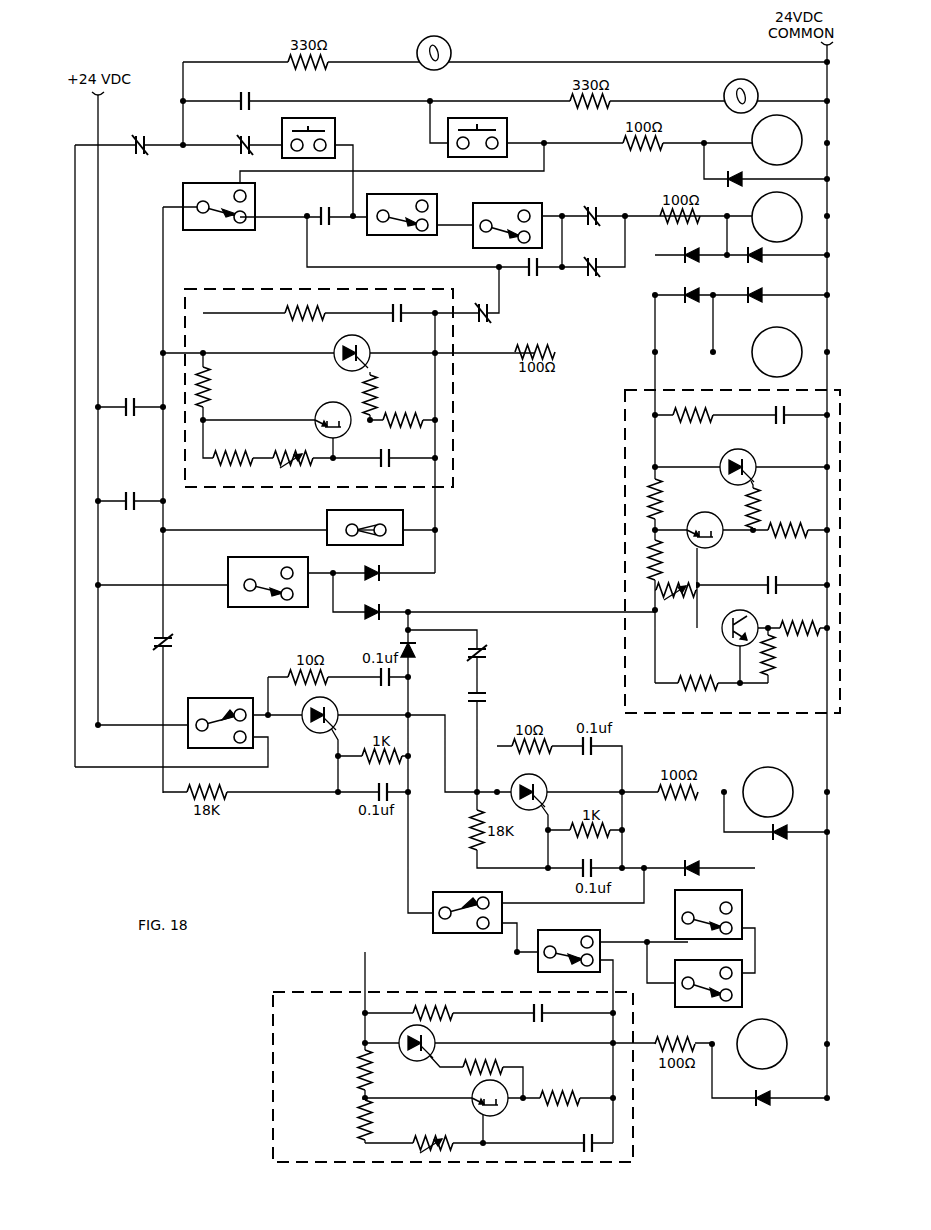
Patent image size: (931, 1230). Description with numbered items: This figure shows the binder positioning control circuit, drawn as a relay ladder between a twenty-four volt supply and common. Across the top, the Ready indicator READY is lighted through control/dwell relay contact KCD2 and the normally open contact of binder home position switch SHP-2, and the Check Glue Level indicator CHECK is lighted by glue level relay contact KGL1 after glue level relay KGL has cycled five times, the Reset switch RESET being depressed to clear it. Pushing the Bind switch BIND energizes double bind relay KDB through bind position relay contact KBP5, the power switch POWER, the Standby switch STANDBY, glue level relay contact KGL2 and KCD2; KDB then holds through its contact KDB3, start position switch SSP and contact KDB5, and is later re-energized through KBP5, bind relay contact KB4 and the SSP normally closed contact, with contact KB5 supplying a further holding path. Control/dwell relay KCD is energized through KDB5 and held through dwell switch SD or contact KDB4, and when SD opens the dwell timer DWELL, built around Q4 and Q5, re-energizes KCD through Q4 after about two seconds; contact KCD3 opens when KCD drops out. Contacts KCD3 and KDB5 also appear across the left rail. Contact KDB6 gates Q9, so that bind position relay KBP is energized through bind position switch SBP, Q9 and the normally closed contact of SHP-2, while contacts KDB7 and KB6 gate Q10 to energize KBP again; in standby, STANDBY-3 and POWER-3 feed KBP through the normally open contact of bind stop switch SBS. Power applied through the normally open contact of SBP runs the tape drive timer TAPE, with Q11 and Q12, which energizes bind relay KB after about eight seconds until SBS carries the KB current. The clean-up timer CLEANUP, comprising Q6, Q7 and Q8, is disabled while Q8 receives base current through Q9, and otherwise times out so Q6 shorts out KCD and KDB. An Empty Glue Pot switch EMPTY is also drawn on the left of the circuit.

The Ready indicator READY is at (431, 43).
The Check Glue Level indicator CHECK is at (713, 87).
The control/dwell relay contact KCD-2 KCD2 is at (139, 137).
The glue level relay contact KGL-1 KGL1 is at (240, 93).
The glue level relay contact KGL-2 KGL2 is at (240, 136).
The Bind switch BIND is at (328, 136).
The Reset switch RESET is at (501, 137).
The glue level relay KGL is at (777, 140).
The double bind relay KDB is at (777, 217).
The control/dwell relay KCD is at (777, 352).
The start position switch SSP is at (223, 218).
The double bind relay contact KDB-3 KDB3 is at (324, 209).
The Standby switch contacts 2 STANDBY is at (410, 225).
The power switch POWER is at (507, 215).
The bind position relay contact KBP-5 KBP5 is at (590, 207).
The bind relay contact KB-5 KB5 is at (592, 258).
The bind relay contact KB-4 KB4 is at (532, 276).
The double bind relay contact KDB-4 KDB4 is at (481, 322).
The dwell timer DWELL is at (306, 431).
The element Q4 is at (320, 349).
The element Q5 is at (298, 411).
The control/dwell relay contact KCD-3 KCD3 is at (130, 419).
The double bind relay contact KDB-5 KDB5 is at (130, 511).
The dwell switch SD is at (299, 518).
The Empty Glue Pot switch EMPTY is at (376, 600).
The double bind relay contact KDB-6 KDB6 is at (185, 642).
The bind relay contact KB-6 KB6 is at (493, 654).
The double bind relay contact KDB-7 KDB7 is at (498, 697).
The binder home position switch SHP-2 is at (188, 713).
The element Q9 is at (345, 719).
The element Q10 is at (555, 790).
The bind position relay KBP is at (768, 792).
The bind position switch SBP is at (478, 903).
The bind stop switch SBS is at (582, 942).
The power switch contacts 3 POWER-3 is at (743, 924).
The Standby switch contacts 3 STANDBY-3 is at (745, 986).
The tape drive timer TAPE is at (492, 1067).
The element Q11 is at (430, 1041).
The element Q12 is at (491, 1106).
The bind relay KB is at (762, 1044).
The clean-up timer CLEANUP is at (694, 504).
The element Q6 is at (750, 467).
The element Q7 is at (721, 537).
The element Q8 is at (716, 637).